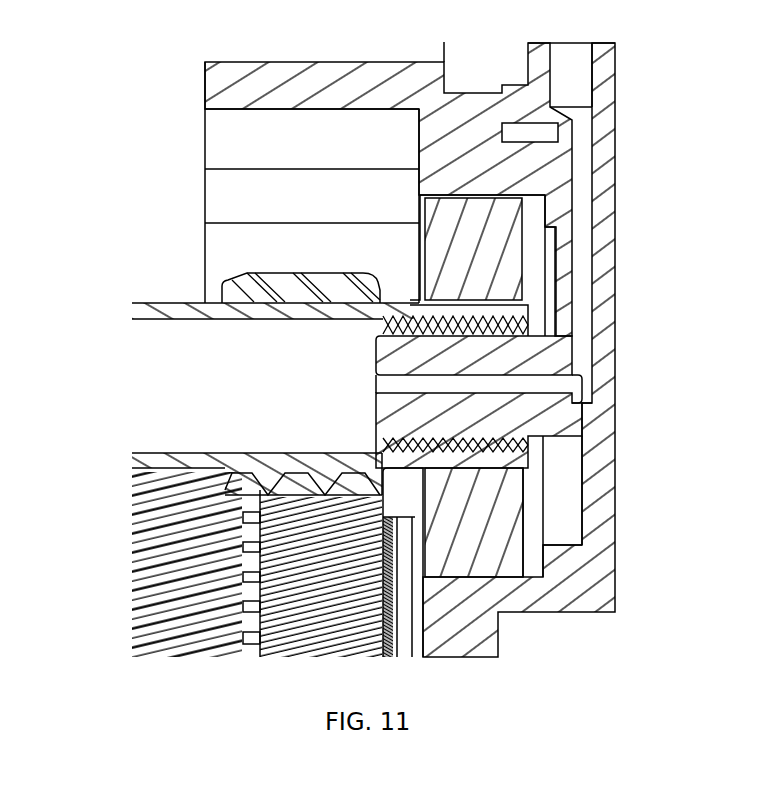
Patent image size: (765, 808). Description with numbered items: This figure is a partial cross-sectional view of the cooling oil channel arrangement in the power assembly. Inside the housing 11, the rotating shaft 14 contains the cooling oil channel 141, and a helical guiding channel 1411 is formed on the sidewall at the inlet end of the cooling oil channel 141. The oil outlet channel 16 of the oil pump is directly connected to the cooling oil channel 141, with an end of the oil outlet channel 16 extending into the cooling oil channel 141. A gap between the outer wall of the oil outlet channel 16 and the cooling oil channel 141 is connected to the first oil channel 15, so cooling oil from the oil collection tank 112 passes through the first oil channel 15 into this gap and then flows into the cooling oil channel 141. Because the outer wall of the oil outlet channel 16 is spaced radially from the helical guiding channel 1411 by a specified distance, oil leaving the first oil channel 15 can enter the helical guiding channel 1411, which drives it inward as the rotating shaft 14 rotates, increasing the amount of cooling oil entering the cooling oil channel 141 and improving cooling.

The housing 11 is at (298, 90).
The oil collection tank 112 is at (212, 139).
The rotating shaft 14 is at (165, 303).
The cooling oil channel 141 is at (175, 385).
The helical guiding channel 1411 is at (383, 322).
The first oil channel 15 is at (537, 272).
The oil outlet channel 16 is at (537, 383).